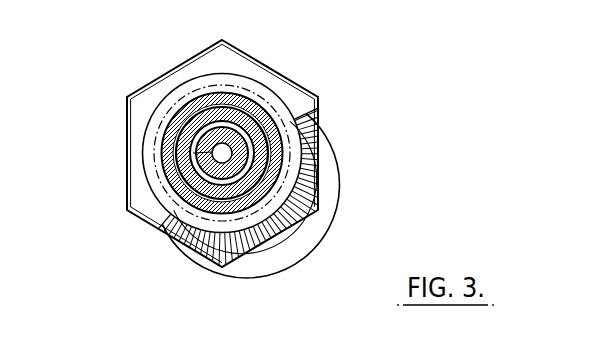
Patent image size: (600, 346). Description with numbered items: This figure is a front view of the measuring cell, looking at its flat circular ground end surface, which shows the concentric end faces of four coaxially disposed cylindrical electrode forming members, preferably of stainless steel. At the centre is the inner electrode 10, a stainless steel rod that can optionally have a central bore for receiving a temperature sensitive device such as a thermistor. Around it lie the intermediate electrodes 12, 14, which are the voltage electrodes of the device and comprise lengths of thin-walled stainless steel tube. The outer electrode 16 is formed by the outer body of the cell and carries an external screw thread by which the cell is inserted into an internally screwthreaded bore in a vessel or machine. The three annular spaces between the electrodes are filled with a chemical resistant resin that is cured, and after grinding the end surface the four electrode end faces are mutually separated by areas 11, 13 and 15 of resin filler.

The inner electrode 10 is at (150, 172).
The area of resin filler 11 is at (270, 127).
The intermediate electrode 12 is at (198, 127).
The area of resin filler 13 is at (308, 108).
The intermediate electrode 14 is at (255, 120).
The area of resin filler 15 is at (293, 138).
The outer electrode 16 is at (287, 153).